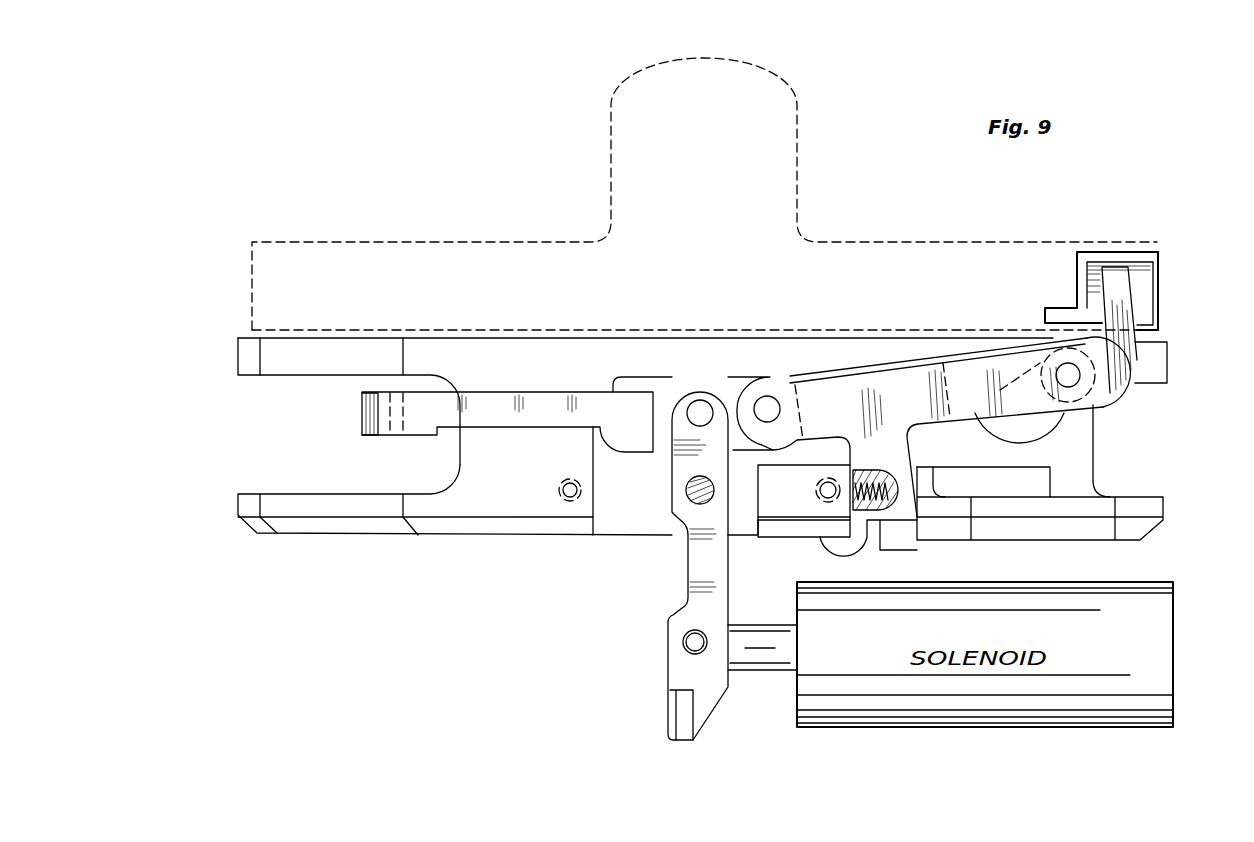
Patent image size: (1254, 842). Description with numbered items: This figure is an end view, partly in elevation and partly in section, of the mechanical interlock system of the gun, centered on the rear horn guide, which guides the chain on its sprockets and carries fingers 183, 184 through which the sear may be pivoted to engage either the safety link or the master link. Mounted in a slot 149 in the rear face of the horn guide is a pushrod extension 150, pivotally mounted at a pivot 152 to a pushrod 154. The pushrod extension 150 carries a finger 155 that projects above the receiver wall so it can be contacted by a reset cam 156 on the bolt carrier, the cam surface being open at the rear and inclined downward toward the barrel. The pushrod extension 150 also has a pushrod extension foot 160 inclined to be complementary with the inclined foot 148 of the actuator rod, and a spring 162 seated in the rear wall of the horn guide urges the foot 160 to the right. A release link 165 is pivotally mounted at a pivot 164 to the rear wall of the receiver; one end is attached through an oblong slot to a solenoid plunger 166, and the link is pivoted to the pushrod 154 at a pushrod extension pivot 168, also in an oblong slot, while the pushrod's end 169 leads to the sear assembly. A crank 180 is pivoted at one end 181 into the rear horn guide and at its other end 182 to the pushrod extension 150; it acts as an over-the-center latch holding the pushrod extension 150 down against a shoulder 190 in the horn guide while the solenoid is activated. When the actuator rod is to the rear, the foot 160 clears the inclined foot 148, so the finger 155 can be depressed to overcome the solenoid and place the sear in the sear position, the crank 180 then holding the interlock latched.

The inclined foot 148 is at (920, 540).
The slot 149 is at (718, 377).
The pushrod extension 150 is at (912, 382).
The pivot 152 is at (767, 408).
The pushrod 154 is at (418, 425).
The finger 155 is at (1118, 284).
The reset cam 156 is at (1150, 308).
The pushrod extension foot 160 is at (915, 494).
The spring 162 is at (875, 507).
The pivot 164 is at (693, 502).
The release link 165 is at (703, 700).
The solenoid plunger 166 is at (780, 657).
The pushrod extension pivot 168 is at (693, 400).
The end 169 is at (362, 405).
The crank 180 is at (1090, 412).
The crank end 181 is at (1033, 427).
The crank end 182 is at (1068, 375).
The finger 183 is at (243, 357).
The finger 184 is at (297, 507).
The shoulder 190 is at (1033, 470).